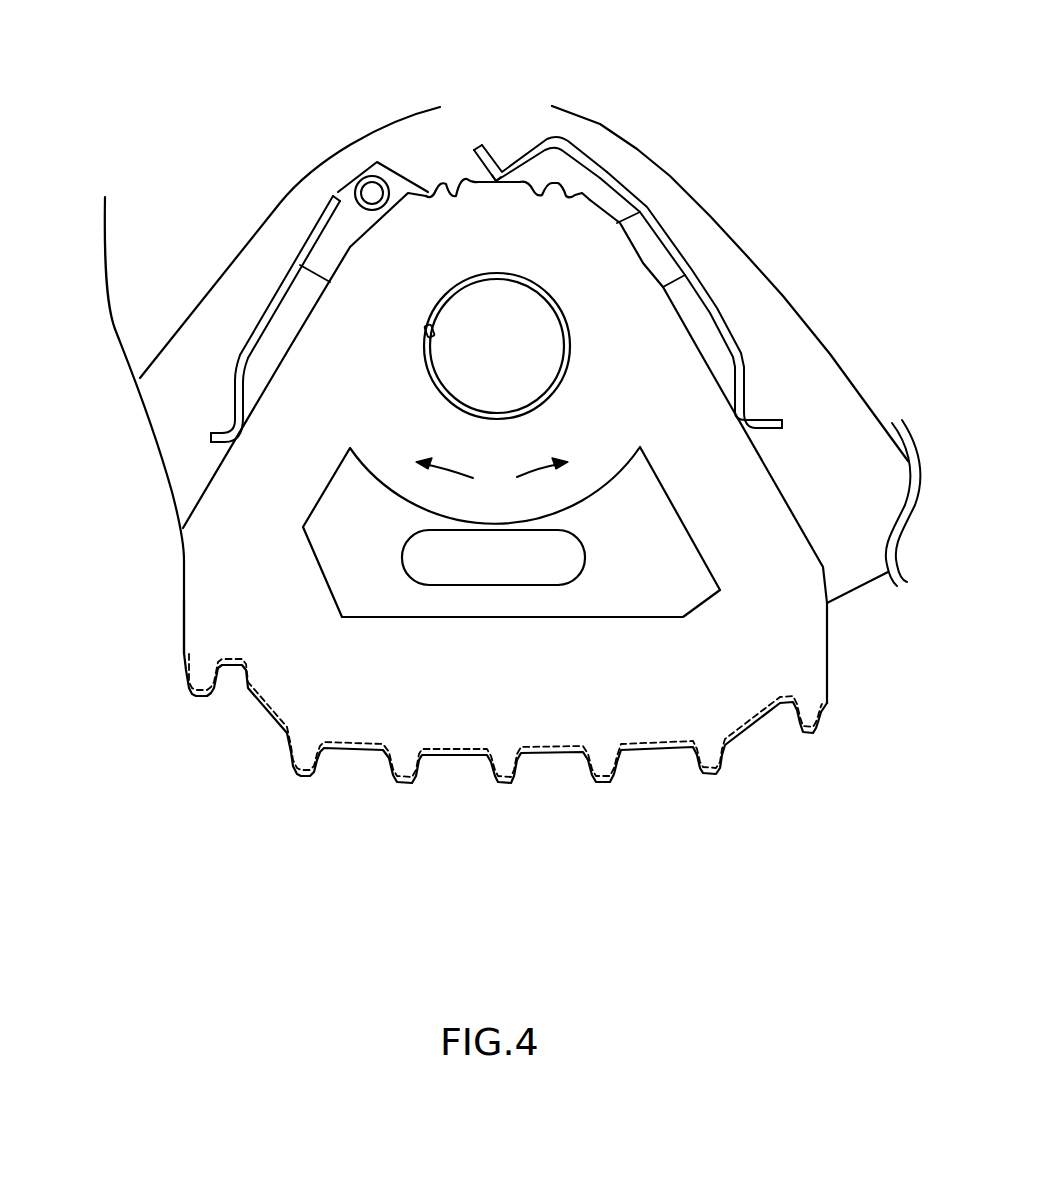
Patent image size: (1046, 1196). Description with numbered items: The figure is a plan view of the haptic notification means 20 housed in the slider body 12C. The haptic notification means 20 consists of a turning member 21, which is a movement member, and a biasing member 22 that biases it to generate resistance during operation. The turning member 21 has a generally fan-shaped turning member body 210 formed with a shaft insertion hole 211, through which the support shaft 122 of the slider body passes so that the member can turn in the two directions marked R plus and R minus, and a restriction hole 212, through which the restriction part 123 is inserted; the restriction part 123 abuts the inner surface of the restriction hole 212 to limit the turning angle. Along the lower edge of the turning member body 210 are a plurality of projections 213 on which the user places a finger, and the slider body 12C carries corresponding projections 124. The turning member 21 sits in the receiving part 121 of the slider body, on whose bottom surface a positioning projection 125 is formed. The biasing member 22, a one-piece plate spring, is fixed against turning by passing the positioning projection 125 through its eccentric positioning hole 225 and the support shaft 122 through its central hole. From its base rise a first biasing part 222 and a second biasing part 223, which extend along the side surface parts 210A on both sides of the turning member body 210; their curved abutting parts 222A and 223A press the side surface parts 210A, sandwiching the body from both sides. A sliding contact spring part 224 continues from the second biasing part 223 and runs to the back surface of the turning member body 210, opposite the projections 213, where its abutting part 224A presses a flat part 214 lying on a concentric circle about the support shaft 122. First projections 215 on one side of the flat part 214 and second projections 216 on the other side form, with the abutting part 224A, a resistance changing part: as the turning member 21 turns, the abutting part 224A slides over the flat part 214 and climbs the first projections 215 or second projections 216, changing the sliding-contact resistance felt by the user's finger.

The haptic notification means 20 is at (490, 841).
The turning member 21 is at (184, 615).
The biasing member 22 is at (404, 172).
The receiving part 121 is at (824, 388).
The support shaft 122 is at (545, 343).
The restriction part 123 is at (463, 580).
The projections 124 is at (293, 782).
The positioning projection 125 is at (375, 182).
The slider body 12C is at (112, 312).
The turning member body 210 is at (184, 556).
The side surface part 210A is at (272, 373).
The shaft insertion hole 211 is at (428, 333).
The restriction hole 212 is at (590, 608).
The projections 213 is at (206, 700).
The flat part 214 is at (520, 186).
The first projections 215 is at (463, 177).
The second projections 216 is at (560, 186).
The first biasing part 222 is at (266, 302).
The abutting part 222A is at (238, 444).
The second biasing part 223 is at (745, 372).
The abutting part 223A is at (741, 430).
The sliding contact spring part 224 is at (527, 147).
The abutting part 224A is at (496, 185).
The positioning hole 225 is at (365, 178).